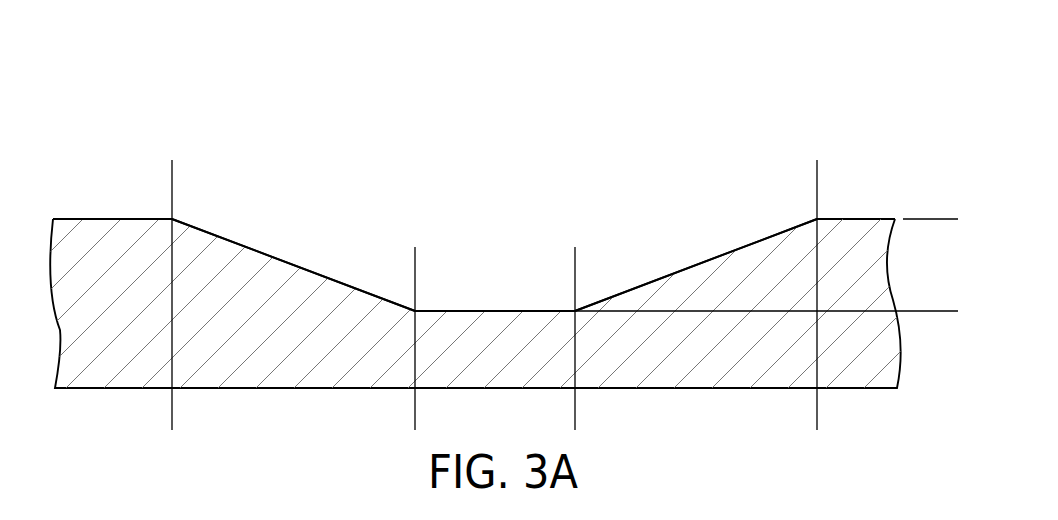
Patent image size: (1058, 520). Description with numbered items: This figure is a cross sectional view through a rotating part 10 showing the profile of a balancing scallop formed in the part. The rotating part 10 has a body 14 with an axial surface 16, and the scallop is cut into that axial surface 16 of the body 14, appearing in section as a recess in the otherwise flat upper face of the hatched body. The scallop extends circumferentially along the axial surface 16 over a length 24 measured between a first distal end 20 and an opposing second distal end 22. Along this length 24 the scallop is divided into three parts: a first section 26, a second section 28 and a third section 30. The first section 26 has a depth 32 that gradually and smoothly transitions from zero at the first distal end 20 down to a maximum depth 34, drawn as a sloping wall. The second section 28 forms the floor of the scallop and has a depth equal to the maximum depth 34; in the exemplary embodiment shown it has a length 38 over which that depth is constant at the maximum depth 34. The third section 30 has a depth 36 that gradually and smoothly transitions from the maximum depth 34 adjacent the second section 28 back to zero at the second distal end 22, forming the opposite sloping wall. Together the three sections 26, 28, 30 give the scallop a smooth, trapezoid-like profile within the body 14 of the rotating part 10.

The rotating part 10 is at (150, 121).
The body 14 is at (113, 252).
The axial surface 16 is at (131, 218).
The first distal end 20 is at (172, 219).
The second distal end 22 is at (817, 219).
The length 24 is at (817, 170).
The first section 26 is at (415, 422).
The second section 28 is at (494, 310).
The third section 30 is at (817, 422).
The depth 32 is at (320, 275).
The maximum depth 34 is at (949, 219).
The depth 36 is at (669, 275).
The length 38 is at (575, 257).